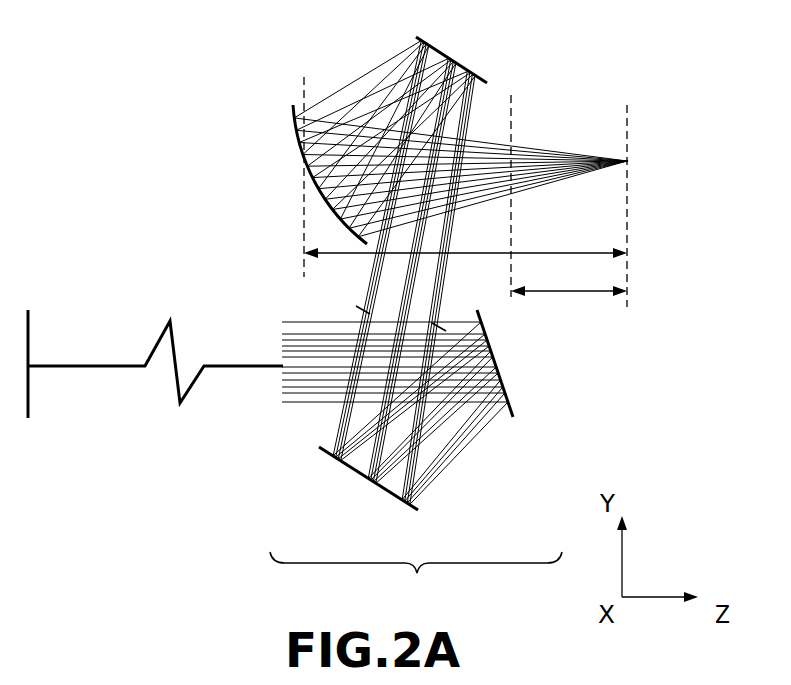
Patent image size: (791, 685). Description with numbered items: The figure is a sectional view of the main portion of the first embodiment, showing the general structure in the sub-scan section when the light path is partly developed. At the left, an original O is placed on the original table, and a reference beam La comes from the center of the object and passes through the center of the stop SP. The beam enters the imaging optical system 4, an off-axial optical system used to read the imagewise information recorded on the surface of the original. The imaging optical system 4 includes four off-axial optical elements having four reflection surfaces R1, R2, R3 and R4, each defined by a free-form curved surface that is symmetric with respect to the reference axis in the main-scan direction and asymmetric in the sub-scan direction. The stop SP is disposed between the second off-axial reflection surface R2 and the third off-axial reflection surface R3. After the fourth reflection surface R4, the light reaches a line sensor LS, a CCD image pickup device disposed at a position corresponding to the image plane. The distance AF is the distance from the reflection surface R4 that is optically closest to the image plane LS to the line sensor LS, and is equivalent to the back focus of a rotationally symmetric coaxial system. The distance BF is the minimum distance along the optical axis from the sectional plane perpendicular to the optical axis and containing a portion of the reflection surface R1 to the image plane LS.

The first off-axial reflection surface R1 is at (502, 375).
The second off-axial reflection surface R2 is at (358, 466).
The third off-axial reflection surface R3 is at (426, 44).
The fourth off-axial reflection surface R4 is at (305, 188).
The line sensor LS is at (628, 165).
The stop SP is at (362, 314).
The original O is at (28, 330).
The reference beam La is at (110, 367).
The distance to the image plane AF is at (465, 240).
The minimum distance to the image plane BF is at (569, 305).
The imaging optical system 4 is at (416, 577).